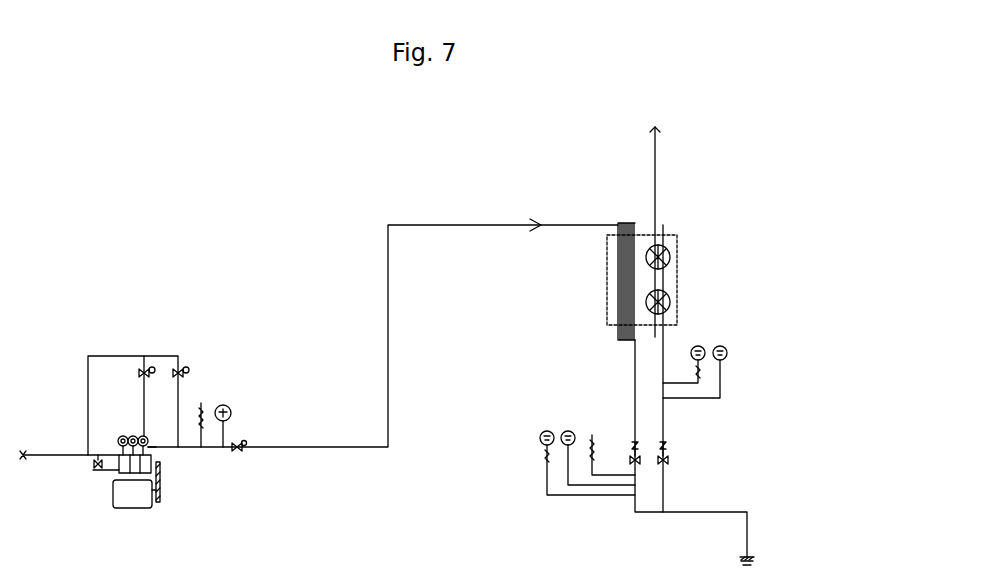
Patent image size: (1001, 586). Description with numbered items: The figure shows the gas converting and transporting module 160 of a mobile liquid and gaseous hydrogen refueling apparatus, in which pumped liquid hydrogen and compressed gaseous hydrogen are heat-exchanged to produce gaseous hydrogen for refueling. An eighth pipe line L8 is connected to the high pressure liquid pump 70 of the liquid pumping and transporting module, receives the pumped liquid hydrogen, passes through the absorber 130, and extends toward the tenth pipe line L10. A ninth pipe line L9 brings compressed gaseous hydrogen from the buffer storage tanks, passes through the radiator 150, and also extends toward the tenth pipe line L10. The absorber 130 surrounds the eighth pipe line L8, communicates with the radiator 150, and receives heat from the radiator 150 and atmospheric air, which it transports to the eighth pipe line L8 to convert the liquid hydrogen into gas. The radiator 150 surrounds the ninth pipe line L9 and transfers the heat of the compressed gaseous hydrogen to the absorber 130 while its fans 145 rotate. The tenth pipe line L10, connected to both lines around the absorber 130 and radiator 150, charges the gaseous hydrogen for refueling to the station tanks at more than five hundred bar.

The gas converting and transporting module 160 is at (338, 141).
The high pressure liquid pump 70 is at (160, 484).
The eighth pipe line L8 is at (388, 325).
The absorber 130 is at (607, 280).
The ninth pipe line L9 is at (656, 178).
The radiator 150 is at (678, 241).
The fans 145 is at (672, 298).
The tenth pipe line L10 is at (748, 532).